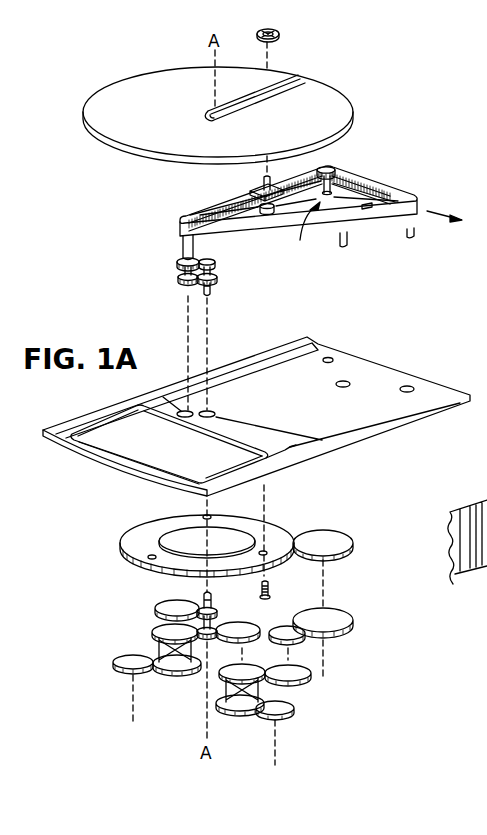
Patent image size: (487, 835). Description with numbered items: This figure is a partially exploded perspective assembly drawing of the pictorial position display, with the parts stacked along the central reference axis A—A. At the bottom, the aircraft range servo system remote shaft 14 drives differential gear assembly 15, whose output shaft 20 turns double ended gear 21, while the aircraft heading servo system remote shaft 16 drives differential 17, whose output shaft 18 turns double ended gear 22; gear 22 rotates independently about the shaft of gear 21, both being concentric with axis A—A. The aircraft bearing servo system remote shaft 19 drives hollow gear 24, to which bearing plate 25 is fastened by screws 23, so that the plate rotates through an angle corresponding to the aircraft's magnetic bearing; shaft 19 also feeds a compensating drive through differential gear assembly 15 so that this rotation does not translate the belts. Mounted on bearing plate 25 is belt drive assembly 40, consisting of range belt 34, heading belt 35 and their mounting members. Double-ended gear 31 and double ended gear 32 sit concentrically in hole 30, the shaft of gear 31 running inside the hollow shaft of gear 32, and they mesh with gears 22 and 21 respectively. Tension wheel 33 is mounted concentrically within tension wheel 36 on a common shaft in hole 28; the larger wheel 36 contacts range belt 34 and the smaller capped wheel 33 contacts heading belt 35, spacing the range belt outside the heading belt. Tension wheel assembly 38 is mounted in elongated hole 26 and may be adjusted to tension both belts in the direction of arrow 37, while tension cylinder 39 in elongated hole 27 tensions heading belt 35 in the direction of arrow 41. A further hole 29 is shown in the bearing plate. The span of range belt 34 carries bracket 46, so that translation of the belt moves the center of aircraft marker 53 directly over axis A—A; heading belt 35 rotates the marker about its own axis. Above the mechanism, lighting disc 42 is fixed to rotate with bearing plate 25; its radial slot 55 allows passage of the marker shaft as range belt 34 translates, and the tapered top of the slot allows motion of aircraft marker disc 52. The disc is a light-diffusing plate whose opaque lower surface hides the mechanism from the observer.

The aircraft range servo system remote shaft 14 is at (277, 745).
The differential gear assembly 15 is at (262, 691).
The aircraft heading servo system remote shaft 16 is at (133, 703).
The differential 17 is at (159, 650).
The output shaft 18 is at (175, 630).
The aircraft bearing servo system remote shaft 19 is at (325, 651).
The output shaft 20 is at (243, 652).
The double ended gear 21 is at (215, 262).
The double ended gear 22 is at (213, 285).
The screws 23 is at (272, 591).
The hollow gear 24 is at (272, 522).
The bearing plate 25 is at (365, 443).
The elongated hole 26 is at (414, 387).
The elongated hole 27 is at (350, 381).
The hole 28 is at (331, 358).
The hole 29 is at (214, 410).
The hole 30 is at (178, 410).
The double-ended gear 31 is at (184, 274).
The double ended gear 32 is at (183, 246).
The tension wheel 33 is at (333, 170).
The range belt 34 is at (378, 184).
The heading belt 35 is at (367, 208).
The tension wheel 36 is at (301, 228).
The arrow 37 is at (447, 205).
The tension wheel assembly 38 is at (412, 237).
The tension cylinder 39 is at (344, 247).
The belt drive assembly 40 is at (289, 270).
The arrow 41 is at (333, 188).
The lighting disc 42 is at (83, 116).
The bracket 46 is at (258, 189).
The aircraft marker disc 52 is at (280, 36).
The aircraft marker 53 is at (263, 31).
The radial slot 55 is at (303, 80).